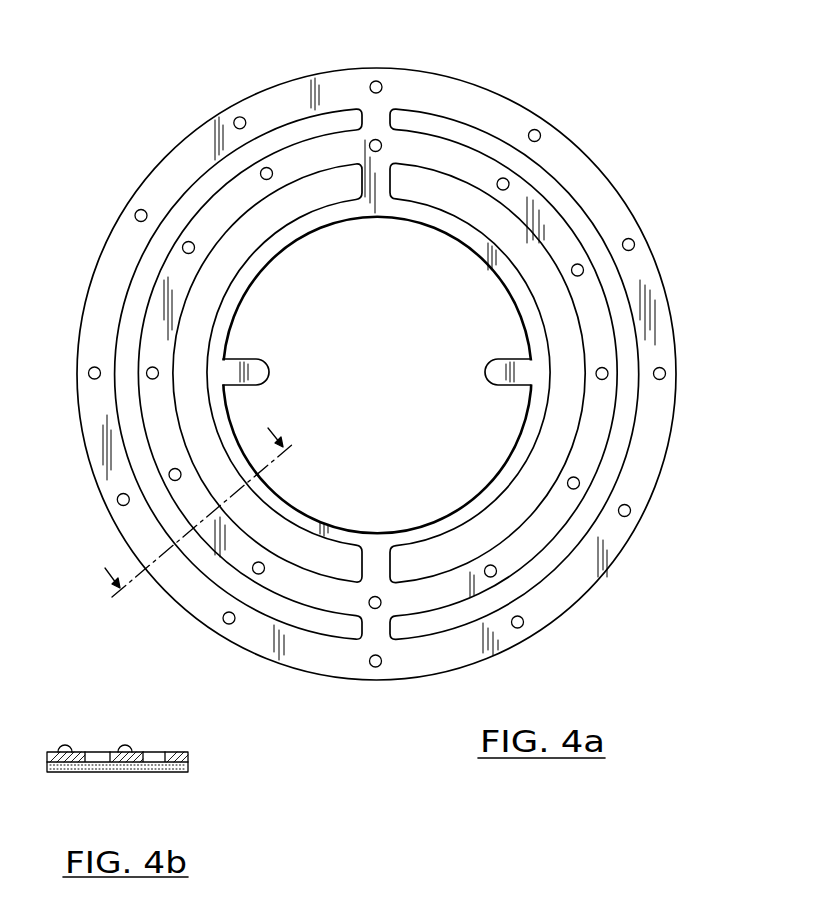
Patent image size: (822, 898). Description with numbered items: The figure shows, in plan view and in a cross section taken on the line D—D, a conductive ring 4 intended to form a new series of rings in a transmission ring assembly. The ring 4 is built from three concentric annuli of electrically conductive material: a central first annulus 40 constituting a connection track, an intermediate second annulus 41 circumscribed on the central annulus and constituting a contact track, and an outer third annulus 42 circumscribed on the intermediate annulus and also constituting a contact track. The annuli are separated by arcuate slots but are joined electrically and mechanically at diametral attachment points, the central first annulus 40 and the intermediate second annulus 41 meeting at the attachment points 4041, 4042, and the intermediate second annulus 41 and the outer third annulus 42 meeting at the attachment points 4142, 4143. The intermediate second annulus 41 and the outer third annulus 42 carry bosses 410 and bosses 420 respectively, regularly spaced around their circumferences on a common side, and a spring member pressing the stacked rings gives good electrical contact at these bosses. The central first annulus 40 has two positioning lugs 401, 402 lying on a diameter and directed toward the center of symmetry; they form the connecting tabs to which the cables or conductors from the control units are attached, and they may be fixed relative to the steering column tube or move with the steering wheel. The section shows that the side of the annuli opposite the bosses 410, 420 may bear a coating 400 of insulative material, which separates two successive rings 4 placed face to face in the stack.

In FIG. 4a, the conductive ring 4 is at (82, 302).
In FIG. 4a, the central first annulus 40 is at (253, 277).
In FIG. 4a, the intermediate second annulus 41 is at (167, 307).
In FIG. 4a, the outer third annulus 42 is at (93, 410).
In FIG. 4a, the positioning lug 401 is at (270, 372).
In FIG. 4a, the positioning lug 402 is at (490, 374).
In FIG. 4a, the bosses 410 is at (607, 381).
In FIG. 4a, the bosses 420 is at (664, 366).
In FIG. 4a, the diametral attachment point 4041 is at (379, 186).
In FIG. 4a, the diametral attachment point 4042 is at (384, 567).
In FIG. 4a, the diametral attachment point 4142 is at (379, 114).
In FIG. 4a, the diametral attachment point 4143 is at (373, 632).
In FIG. 4b, the coating of insulative material 400 is at (72, 770).